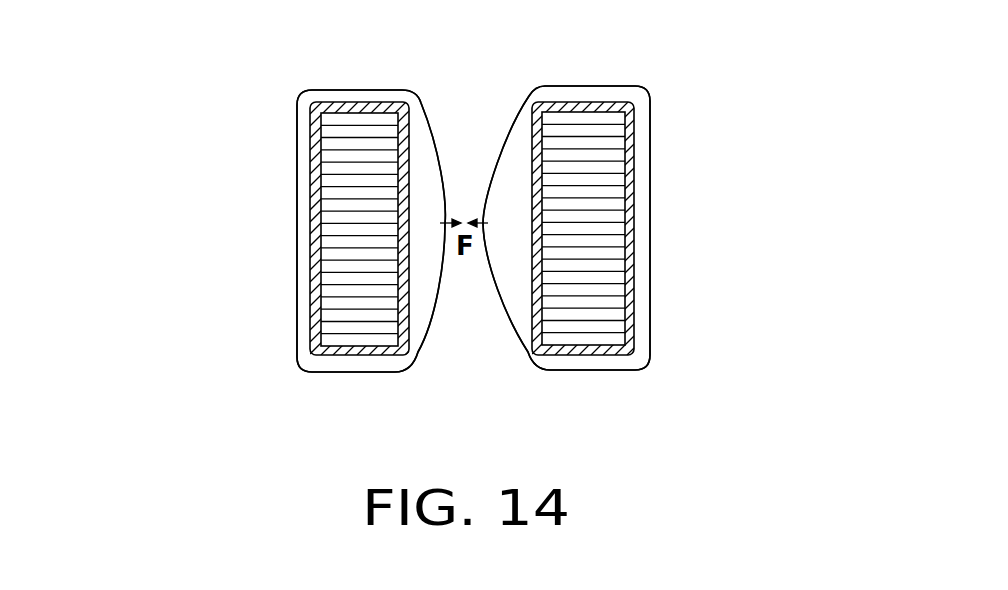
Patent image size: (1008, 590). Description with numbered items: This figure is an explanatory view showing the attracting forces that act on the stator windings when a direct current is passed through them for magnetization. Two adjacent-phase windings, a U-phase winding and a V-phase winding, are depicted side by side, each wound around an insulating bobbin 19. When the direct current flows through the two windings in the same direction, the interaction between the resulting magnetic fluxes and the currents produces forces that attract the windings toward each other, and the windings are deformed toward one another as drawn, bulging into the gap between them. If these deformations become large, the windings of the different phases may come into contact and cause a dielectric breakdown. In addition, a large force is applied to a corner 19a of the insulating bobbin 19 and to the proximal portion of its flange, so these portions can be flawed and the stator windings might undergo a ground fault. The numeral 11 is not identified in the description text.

The laminated core 11 is at (352, 318).
The insulating bobbin 19 is at (310, 242).
The corner of the insulating bobbin 19a is at (397, 101).